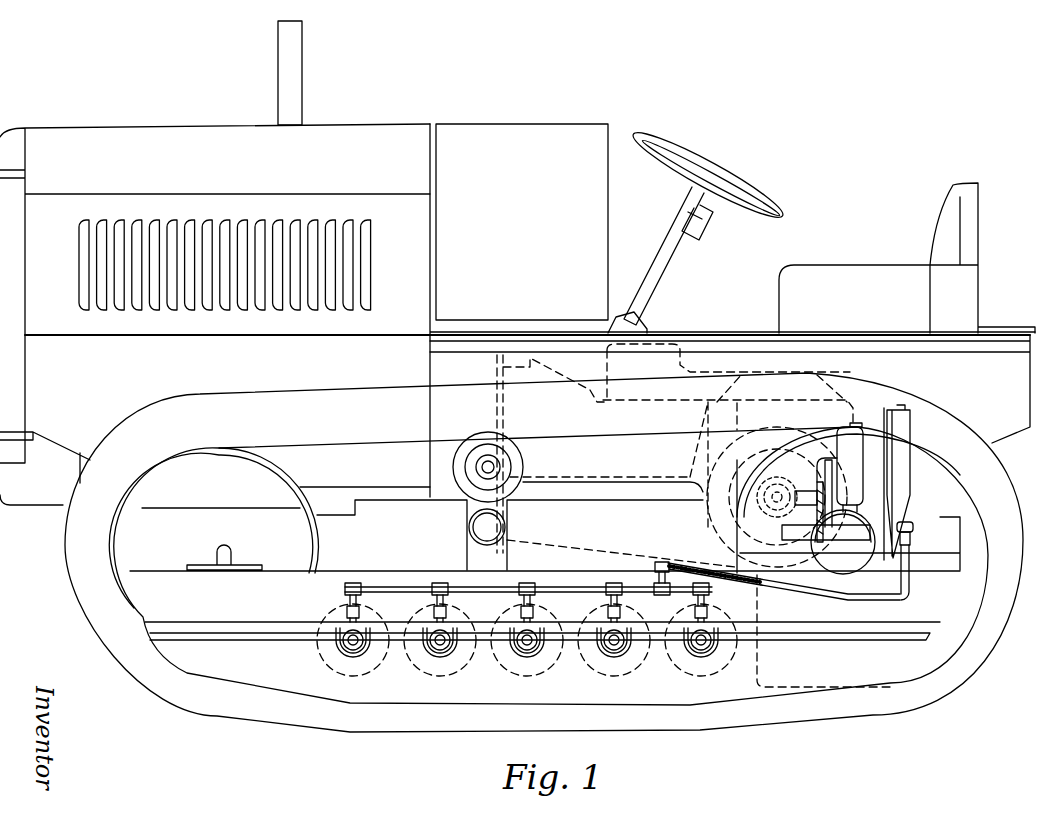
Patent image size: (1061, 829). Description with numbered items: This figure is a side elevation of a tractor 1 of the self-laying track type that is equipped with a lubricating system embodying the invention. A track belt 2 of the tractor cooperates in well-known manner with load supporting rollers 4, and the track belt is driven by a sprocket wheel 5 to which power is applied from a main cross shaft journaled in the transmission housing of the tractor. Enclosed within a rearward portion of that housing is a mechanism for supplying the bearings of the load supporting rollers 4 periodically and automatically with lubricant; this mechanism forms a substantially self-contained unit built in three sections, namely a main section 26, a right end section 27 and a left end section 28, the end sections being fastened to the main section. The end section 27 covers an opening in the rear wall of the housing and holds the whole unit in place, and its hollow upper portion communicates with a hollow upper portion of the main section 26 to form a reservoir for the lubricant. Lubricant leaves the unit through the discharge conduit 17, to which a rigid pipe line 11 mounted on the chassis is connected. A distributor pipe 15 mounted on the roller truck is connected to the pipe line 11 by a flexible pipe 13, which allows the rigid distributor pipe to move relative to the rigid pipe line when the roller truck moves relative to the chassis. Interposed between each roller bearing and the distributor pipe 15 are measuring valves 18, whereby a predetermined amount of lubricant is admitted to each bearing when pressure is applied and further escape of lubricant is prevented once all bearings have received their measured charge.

The tractor 1 is at (545, 271).
The track belt 2 is at (1010, 608).
The load supporting rollers 4 is at (407, 674).
The sprocket wheel 5 is at (727, 470).
The rigid pipe line 11 is at (912, 578).
The flexible pipe 13 is at (730, 577).
The distributor pipe 15 is at (565, 589).
The discharge conduit 17 is at (907, 527).
The measuring valves 18 is at (447, 613).
The main section 26 is at (853, 427).
The right end section 27 is at (910, 432).
The left end section 28 is at (808, 492).